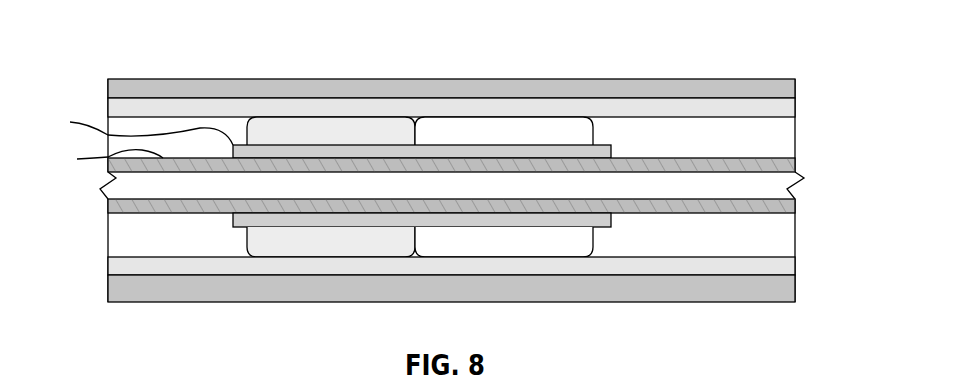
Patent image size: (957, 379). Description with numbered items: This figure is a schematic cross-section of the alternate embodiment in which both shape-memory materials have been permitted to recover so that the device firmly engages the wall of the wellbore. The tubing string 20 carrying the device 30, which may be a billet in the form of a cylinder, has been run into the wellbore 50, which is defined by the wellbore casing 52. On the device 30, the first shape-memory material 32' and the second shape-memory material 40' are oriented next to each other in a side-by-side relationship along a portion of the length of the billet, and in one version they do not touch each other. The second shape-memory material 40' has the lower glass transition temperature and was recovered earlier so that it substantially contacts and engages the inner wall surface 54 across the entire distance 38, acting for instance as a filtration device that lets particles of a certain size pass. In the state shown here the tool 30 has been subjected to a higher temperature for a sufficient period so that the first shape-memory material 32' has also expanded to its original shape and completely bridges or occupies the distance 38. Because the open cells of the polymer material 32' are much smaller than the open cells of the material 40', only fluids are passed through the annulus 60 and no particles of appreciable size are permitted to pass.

The tubing string 20 is at (420, 158).
The device 30 is at (324, 133).
The first shape-memory material 32' is at (330, 230).
The distance 38 is at (638, 182).
The second shape-memory material 40' is at (480, 209).
The wellbore 50 is at (748, 273).
The wellbore casing 52 is at (787, 270).
The inner wall surface 54 is at (767, 117).
The annulus 60 is at (768, 143).